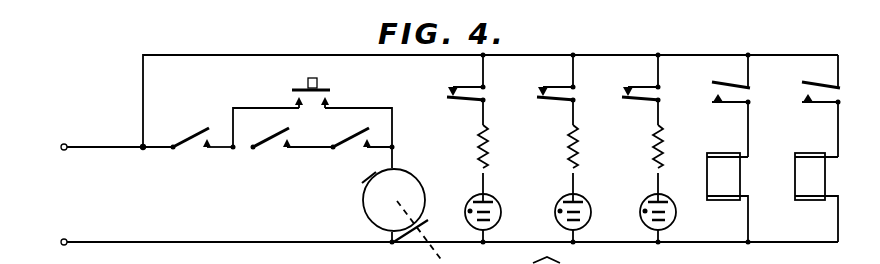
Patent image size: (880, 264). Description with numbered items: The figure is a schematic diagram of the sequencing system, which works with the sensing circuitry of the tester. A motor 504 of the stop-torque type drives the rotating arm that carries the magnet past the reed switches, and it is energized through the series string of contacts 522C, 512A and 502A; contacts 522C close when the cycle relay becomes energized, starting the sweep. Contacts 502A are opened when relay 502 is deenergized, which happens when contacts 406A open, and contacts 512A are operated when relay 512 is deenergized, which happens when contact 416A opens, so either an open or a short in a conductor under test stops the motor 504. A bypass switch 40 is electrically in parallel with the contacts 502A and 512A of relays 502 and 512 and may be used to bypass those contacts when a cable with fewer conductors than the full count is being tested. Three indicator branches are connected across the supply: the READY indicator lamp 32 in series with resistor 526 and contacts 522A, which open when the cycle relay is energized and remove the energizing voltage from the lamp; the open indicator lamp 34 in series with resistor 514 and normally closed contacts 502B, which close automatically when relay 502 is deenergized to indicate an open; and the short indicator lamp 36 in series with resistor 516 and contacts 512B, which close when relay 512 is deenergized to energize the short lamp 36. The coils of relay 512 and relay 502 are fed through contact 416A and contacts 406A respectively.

The contacts of relay 522 522C is at (183, 151).
The contacts of relay 512 512A is at (262, 151).
The contacts of relay 502 502A is at (343, 151).
The bypass switch 40 is at (318, 83).
The motor 504 is at (363, 206).
The contacts of relay 522 522A is at (457, 86).
The contacts of relay 502 502B is at (567, 86).
The contacts of relay 512 512B is at (642, 86).
The resistor 526 is at (488, 153).
The resistor 514 is at (578, 153).
The resistor 516 is at (655, 131).
The READY indicator lamp 32 is at (500, 205).
The open indicator lamp 34 is at (589, 200).
The short indicator lamp 36 is at (642, 219).
The contact of relay 416 416A is at (733, 86).
The contacts of relay 406 406A is at (821, 86).
The relay 512 is at (741, 177).
The relay 502 is at (809, 152).